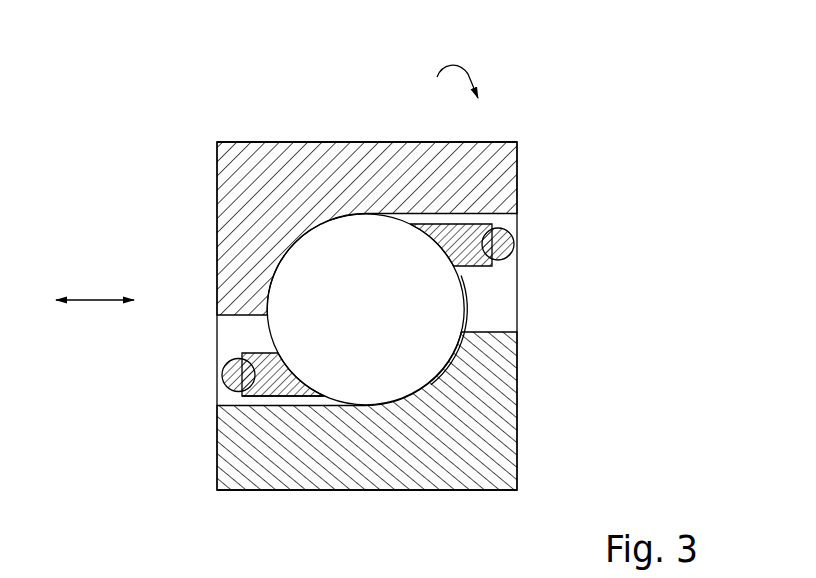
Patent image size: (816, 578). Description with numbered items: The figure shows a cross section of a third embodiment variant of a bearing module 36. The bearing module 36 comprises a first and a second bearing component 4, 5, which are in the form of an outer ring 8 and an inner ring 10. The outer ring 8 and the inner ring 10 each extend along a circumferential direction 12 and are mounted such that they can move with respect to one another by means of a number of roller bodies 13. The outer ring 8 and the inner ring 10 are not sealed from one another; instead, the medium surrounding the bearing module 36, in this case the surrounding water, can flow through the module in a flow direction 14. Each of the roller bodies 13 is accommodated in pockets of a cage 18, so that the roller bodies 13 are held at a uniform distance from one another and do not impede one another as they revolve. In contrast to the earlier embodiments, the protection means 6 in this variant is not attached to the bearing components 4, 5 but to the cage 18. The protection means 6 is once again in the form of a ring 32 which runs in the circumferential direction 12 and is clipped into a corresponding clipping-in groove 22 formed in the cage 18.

The first bearing component 4 is at (380, 140).
The second bearing component 5 is at (475, 493).
The protection means 6 is at (214, 389).
The outer ring 8 is at (253, 163).
The inner ring 10 is at (367, 460).
The circumferential direction 12 is at (422, 140).
The roller bodies 13 is at (379, 321).
The flow direction 14 is at (90, 299).
The cage 18 is at (283, 397).
The clipping-in groove 22 is at (263, 353).
The ring 32 is at (512, 234).
The bearing module 36 is at (541, 432).